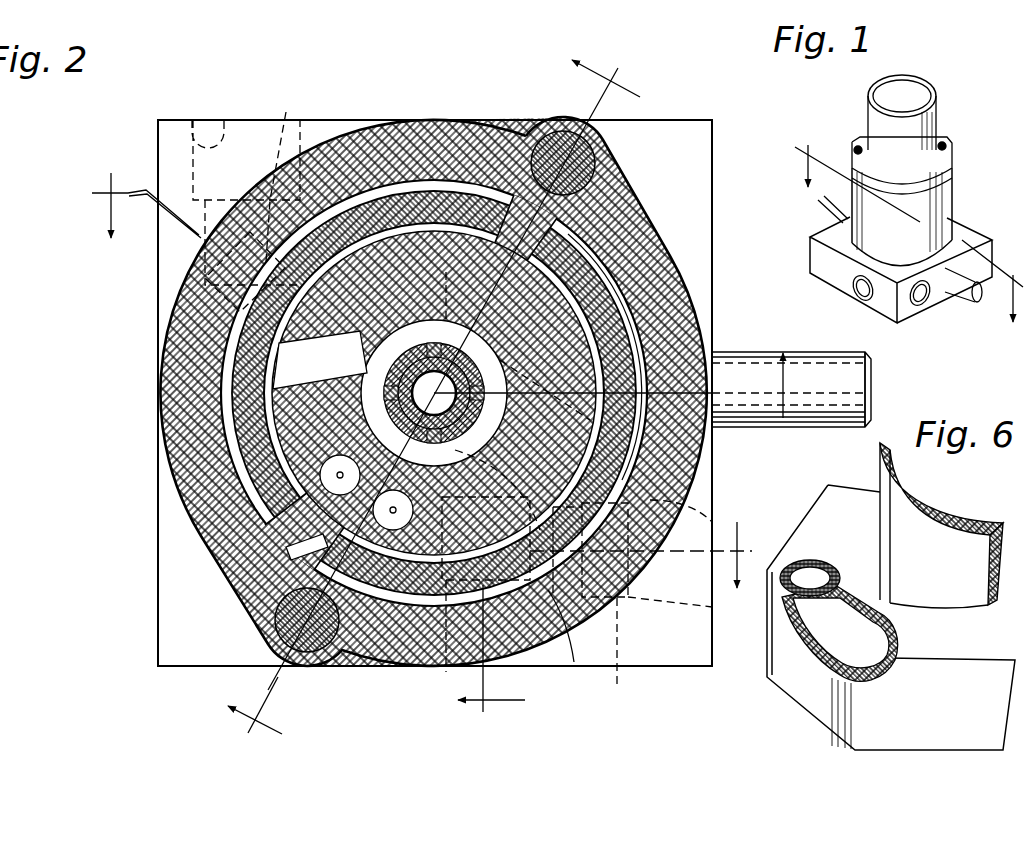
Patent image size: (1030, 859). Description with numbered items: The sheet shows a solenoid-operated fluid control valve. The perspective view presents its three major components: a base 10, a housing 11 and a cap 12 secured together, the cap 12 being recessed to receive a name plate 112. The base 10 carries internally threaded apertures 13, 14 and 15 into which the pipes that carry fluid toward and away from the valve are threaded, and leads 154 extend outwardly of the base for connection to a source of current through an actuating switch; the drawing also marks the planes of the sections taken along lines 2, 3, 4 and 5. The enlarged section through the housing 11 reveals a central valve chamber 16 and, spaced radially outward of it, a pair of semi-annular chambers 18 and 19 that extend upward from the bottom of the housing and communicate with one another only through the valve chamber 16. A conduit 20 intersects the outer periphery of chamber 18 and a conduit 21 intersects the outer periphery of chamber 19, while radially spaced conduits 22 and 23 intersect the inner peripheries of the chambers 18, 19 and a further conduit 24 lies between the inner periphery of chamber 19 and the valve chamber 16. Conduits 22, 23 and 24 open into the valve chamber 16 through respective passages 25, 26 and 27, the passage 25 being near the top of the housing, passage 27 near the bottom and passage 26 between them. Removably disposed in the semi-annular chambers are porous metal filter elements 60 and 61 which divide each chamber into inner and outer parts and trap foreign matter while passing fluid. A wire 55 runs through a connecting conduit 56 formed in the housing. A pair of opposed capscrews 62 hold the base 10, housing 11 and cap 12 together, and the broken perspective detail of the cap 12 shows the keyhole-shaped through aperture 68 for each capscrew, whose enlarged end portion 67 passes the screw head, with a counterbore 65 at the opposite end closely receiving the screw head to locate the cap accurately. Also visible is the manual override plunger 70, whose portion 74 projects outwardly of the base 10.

In FIG. 1, the base 10 is at (830, 272).
In FIG. 2, the housing 11 is at (644, 187).
In FIG. 1, the housing 11 is at (954, 200).
In FIG. 1, the cap 12 is at (926, 82).
In FIG. 6, the cap 12 is at (814, 730).
In FIG. 1, the name plate 112 is at (890, 88).
In FIG. 2, the internally threaded aperture 13 is at (214, 119).
In FIG. 2, the internally threaded aperture 14 is at (446, 672).
In FIG. 1, the internally threaded aperture 14 is at (861, 302).
In FIG. 2, the internally threaded aperture 15 is at (713, 510).
In FIG. 1, the internally threaded aperture 15 is at (916, 306).
In FIG. 1, the leads 154 is at (818, 204).
In FIG. 2, the valve chamber 16 is at (346, 455).
In FIG. 2, the semi-annular chamber 18 is at (320, 481).
In FIG. 2, the semi-annular chamber 19 is at (612, 275).
In FIG. 2, the conduit 20 is at (283, 125).
In FIG. 2, the conduit 21 is at (617, 684).
In FIG. 2, the conduit 22 is at (434, 393).
In FIG. 2, the conduit 23 is at (641, 343).
In FIG. 2, the conduit 24 is at (522, 472).
In FIG. 2, the passage 25 is at (400, 382).
In FIG. 2, the passage 26 is at (446, 290).
In FIG. 2, the passage 27 is at (540, 424).
In FIG. 2, the wire 55 is at (327, 517).
In FIG. 2, the connecting conduit 56 is at (310, 527).
In FIG. 2, the filter element 60 is at (237, 410).
In FIG. 2, the filter element 61 is at (575, 662).
In FIG. 2, the capscrews 62 is at (561, 141).
In FIG. 6, the counterbore 65 is at (828, 560).
In FIG. 6, the enlarged end portion 67 is at (866, 662).
In FIG. 6, the keyhole aperture 68 is at (838, 616).
In FIG. 2, the plunger 70 is at (793, 434).
In FIG. 2, the projecting portion 74 is at (860, 386).
In FIG. 1, the section line 2- 2 is at (808, 144).
In FIG. 2, the section line 3- 3 is at (111, 240).
In FIG. 2, the section line 4- 4 is at (566, 61).
In FIG. 2, the section line 5- 5 is at (226, 706).